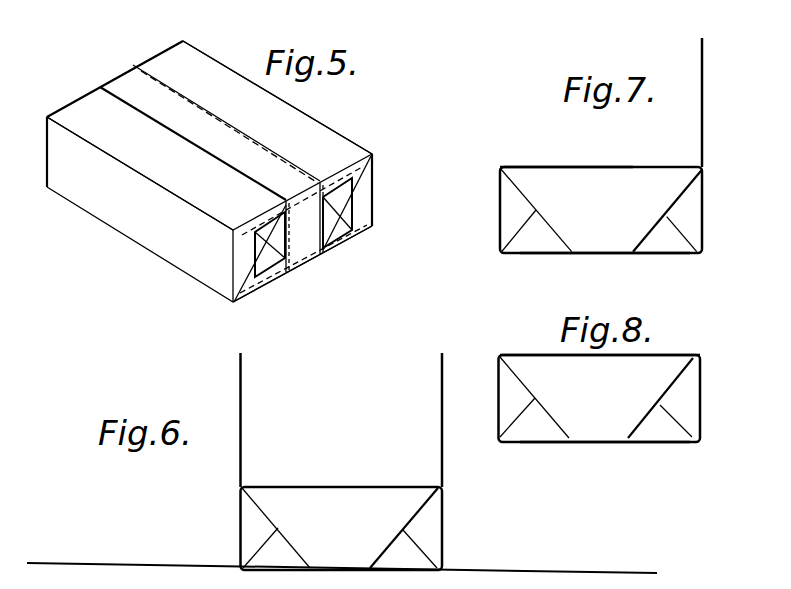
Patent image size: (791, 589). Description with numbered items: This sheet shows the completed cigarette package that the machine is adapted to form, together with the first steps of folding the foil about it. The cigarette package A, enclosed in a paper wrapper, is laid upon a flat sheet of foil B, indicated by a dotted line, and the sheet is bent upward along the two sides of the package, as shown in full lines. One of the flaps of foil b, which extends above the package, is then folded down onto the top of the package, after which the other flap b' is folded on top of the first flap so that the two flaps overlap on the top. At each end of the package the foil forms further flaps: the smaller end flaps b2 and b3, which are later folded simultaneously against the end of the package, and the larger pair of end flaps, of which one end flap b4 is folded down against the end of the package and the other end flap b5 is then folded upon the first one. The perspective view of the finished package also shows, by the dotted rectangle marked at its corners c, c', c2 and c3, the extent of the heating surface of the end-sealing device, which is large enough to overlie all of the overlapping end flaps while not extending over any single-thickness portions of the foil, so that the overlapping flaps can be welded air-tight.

In FIG. 6, the cigarette package A is at (415, 530).
In FIG. 7, the cigarette package A is at (645, 205).
In FIG. 8, the cigarette package A is at (643, 393).
In FIG. 6, the sheet of foil B is at (127, 562).
In FIG. 7, the sheet of foil B is at (585, 255).
In FIG. 8, the sheet of foil B is at (607, 442).
In FIG. 5, the flap of foil b is at (209, 171).
In FIG. 6, the flap of foil b is at (260, 420).
In FIG. 7, the flap of foil b is at (566, 145).
In FIG. 8, the flap of foil b is at (550, 337).
In FIG. 5, the other flap b' is at (210, 112).
In FIG. 6, the other flap b' is at (419, 420).
In FIG. 7, the other flap b' is at (724, 102).
In FIG. 8, the other flap b' is at (650, 335).
In FIG. 5, the smaller end flap b2 is at (242, 255).
In FIG. 5, the smaller end flap b3 is at (363, 190).
In FIG. 5, the larger end flap b4 is at (363, 165).
In FIG. 5, the larger end flap b5 is at (337, 220).
In FIG. 5, the corner of dotted rectangle c is at (140, 173).
In FIG. 5, the corner of dotted rectangle c' is at (277, 101).
In FIG. 5, the corner of dotted rectangle c2 is at (302, 275).
In FIG. 5, the corner of dotted rectangle c3 is at (384, 209).